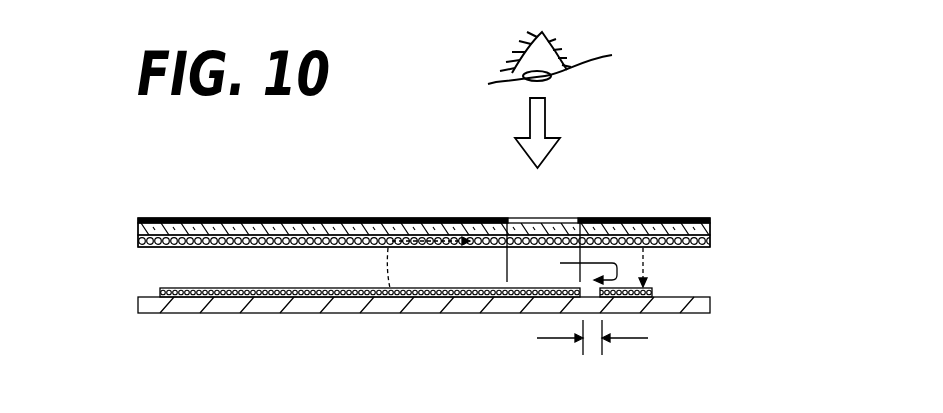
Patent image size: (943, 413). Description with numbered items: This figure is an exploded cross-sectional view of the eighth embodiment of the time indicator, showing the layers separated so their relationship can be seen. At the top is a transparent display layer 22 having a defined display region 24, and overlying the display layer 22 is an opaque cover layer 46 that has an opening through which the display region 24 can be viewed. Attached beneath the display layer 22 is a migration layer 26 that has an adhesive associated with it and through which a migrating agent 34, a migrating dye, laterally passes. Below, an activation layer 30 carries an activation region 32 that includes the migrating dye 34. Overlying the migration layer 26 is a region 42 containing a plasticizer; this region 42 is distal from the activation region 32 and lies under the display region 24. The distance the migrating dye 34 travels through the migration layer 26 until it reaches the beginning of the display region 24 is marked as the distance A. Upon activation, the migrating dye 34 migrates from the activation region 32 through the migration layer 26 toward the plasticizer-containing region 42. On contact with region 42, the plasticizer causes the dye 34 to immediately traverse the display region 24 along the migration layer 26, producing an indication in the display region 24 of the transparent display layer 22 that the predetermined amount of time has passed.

The display layer 22 is at (138, 226).
The display region 24 is at (535, 218).
The migration layer 26 is at (138, 244).
The activation layer 30 is at (490, 313).
The activation region 32 is at (653, 295).
The migrating agent 34 is at (574, 268).
The plasticizer region 42 is at (198, 288).
The opaque cover layer 46 is at (335, 218).
The migration distance A is at (592, 354).